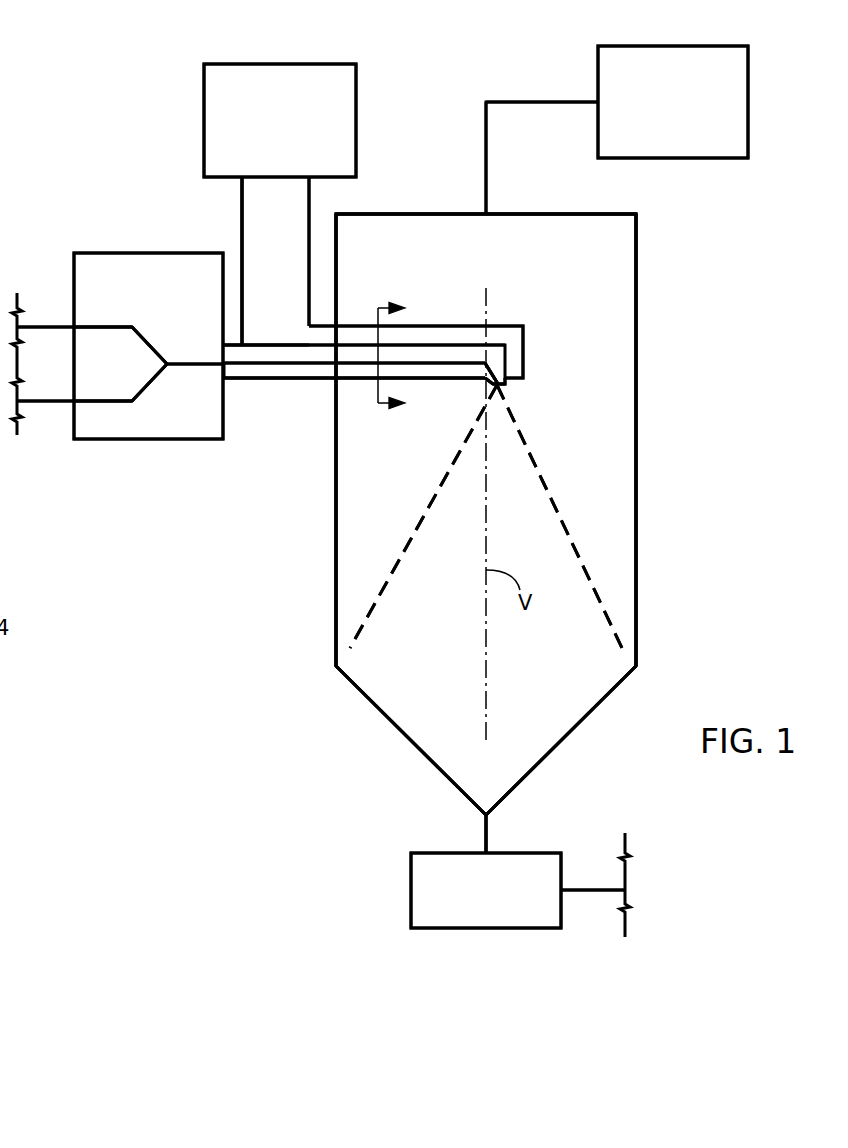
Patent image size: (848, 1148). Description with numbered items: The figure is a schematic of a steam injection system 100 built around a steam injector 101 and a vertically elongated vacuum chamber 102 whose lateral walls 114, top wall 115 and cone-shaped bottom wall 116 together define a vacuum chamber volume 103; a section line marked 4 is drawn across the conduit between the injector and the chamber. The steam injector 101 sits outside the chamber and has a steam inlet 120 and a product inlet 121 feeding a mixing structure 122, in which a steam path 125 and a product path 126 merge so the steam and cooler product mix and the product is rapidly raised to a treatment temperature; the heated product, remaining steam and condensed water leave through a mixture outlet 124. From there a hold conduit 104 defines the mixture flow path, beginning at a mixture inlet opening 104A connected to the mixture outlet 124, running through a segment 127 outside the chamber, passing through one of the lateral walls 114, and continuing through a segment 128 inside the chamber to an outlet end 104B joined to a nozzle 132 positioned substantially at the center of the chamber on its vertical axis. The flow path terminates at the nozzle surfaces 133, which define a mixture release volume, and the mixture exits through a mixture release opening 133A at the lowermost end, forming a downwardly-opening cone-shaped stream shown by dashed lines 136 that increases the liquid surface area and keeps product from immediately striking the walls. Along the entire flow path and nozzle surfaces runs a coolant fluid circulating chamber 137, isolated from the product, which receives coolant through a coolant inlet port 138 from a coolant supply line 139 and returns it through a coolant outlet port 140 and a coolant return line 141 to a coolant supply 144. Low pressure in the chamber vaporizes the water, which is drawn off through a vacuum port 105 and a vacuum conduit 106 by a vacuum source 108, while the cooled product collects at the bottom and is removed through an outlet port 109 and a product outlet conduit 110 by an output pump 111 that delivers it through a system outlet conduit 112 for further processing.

The steam injection system 100 is at (277, 583).
The steam injector 101 is at (148, 253).
The vacuum chamber 102 is at (655, 363).
The vacuum chamber volume 103 is at (548, 272).
The hold conduit 104 is at (318, 370).
The mixture inlet opening 104A is at (230, 380).
The outlet end 104B is at (492, 364).
The vacuum port 105 is at (485, 213).
The vacuum conduit 106 is at (528, 102).
The vacuum source 108 is at (654, 143).
The outlet port 109 is at (483, 818).
The product outlet conduit 110 is at (490, 830).
The output pump 111 is at (410, 890).
The system outlet conduit 112 is at (600, 892).
The lateral walls 114 is at (336, 495).
The top wall 115 is at (508, 213).
The cone-shaped bottom wall 116 is at (557, 747).
The steam inlet 120 is at (73, 327).
The product inlet 121 is at (73, 402).
The mixing structure 122 is at (170, 370).
The mixture outlet 124 is at (222, 366).
The steam path 125 is at (107, 326).
The product path 126 is at (92, 403).
The flow path segment 127 is at (295, 358).
The flow path segment 128 is at (360, 376).
The nozzle 132 is at (492, 392).
The nozzle surfaces 133 is at (482, 383).
The mixture release opening 133A is at (492, 390).
The cone-shaped stream 136 is at (433, 478).
The coolant fluid circulating chamber 137 is at (250, 380).
The coolant inlet port 138 is at (243, 345).
The coolant supply line 139 is at (242, 233).
The coolant outlet port 140 is at (507, 382).
The coolant return line 141 is at (525, 345).
The coolant supply 144 is at (261, 162).
The section line 4- 4 is at (389, 358).